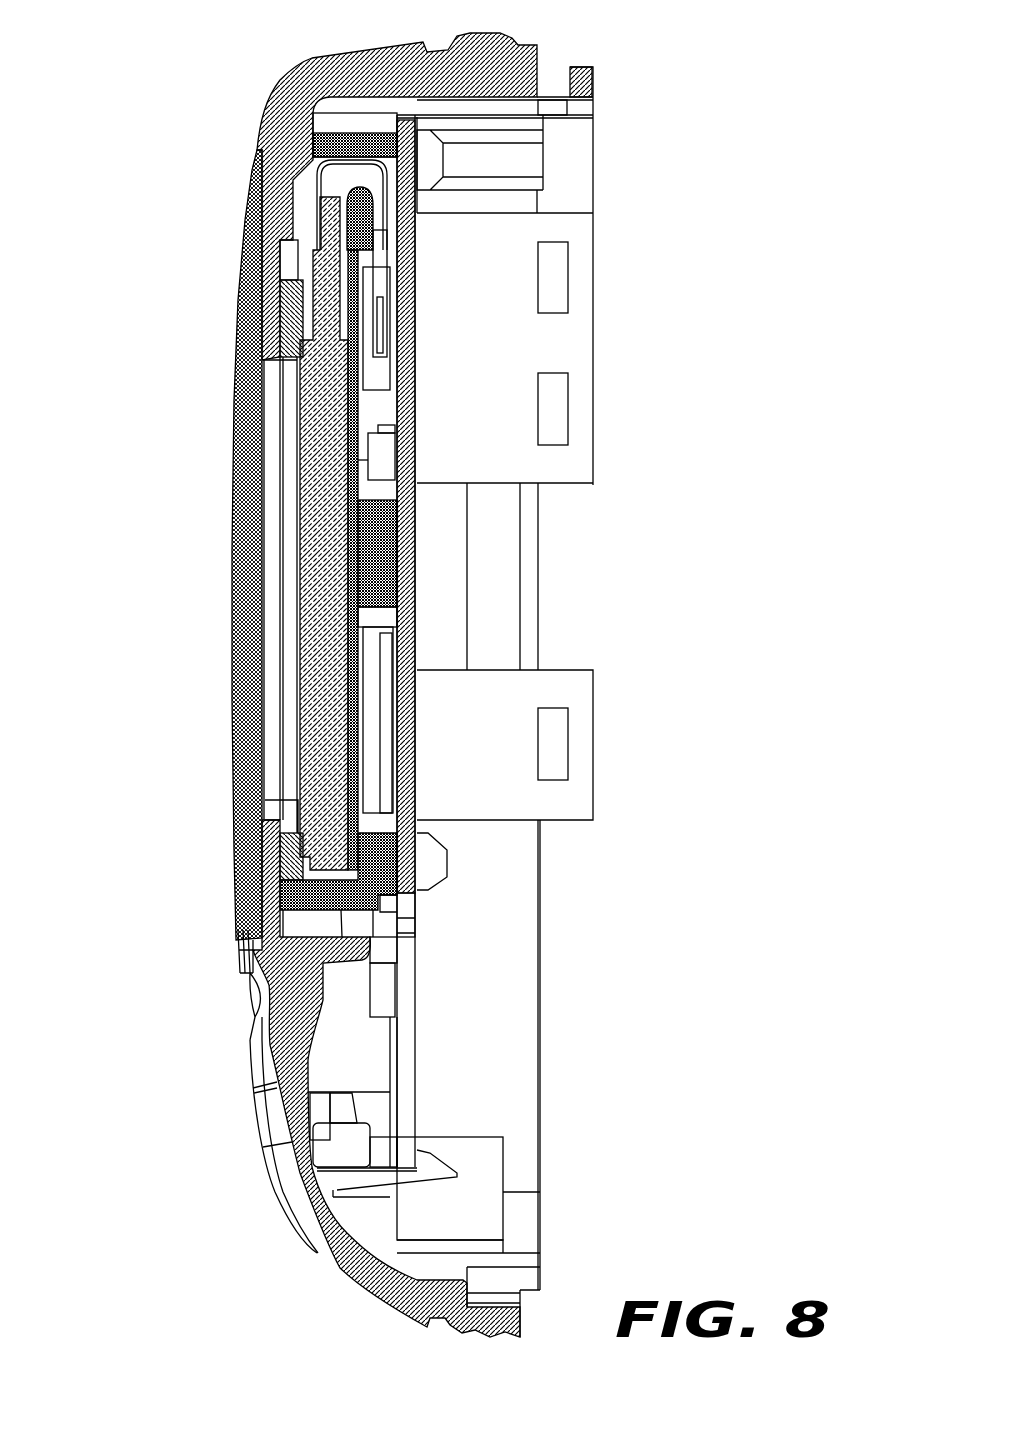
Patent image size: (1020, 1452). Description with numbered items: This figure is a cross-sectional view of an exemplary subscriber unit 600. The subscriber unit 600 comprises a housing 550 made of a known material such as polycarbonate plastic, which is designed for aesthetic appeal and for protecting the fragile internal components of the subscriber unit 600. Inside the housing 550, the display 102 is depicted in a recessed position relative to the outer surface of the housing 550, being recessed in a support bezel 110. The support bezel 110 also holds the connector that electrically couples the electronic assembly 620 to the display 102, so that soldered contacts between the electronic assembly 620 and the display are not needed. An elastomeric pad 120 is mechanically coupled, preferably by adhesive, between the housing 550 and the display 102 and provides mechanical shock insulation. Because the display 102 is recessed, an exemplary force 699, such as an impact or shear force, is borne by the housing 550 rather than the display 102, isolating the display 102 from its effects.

The force 699 is at (235, 128).
The housing 550 is at (278, 128).
The support bezel 110 is at (368, 143).
The elastomeric pad 120 is at (283, 308).
The display 102 is at (327, 688).
The electronic assembly 620 is at (403, 427).
The subscriber unit 600 is at (763, 1232).